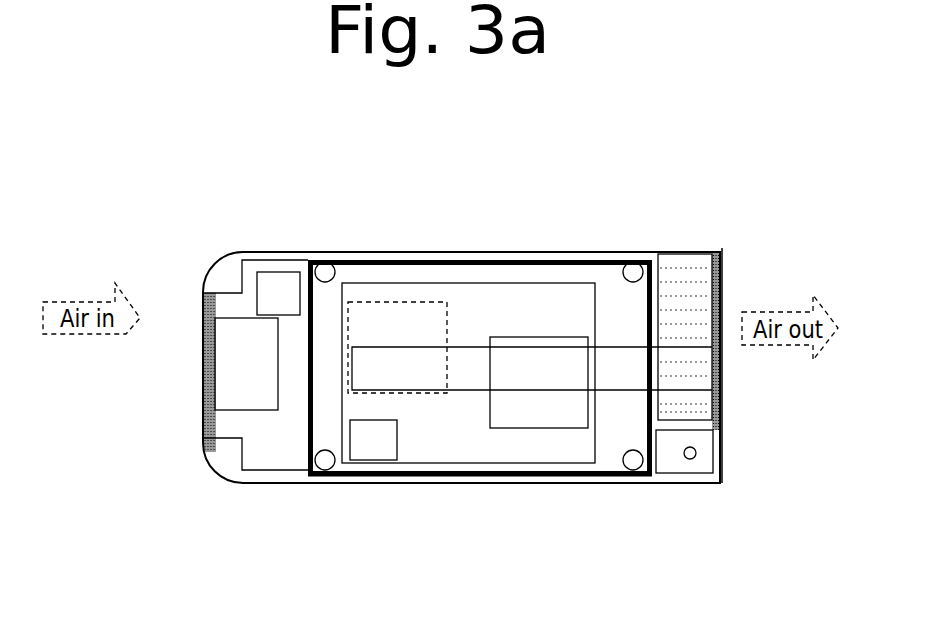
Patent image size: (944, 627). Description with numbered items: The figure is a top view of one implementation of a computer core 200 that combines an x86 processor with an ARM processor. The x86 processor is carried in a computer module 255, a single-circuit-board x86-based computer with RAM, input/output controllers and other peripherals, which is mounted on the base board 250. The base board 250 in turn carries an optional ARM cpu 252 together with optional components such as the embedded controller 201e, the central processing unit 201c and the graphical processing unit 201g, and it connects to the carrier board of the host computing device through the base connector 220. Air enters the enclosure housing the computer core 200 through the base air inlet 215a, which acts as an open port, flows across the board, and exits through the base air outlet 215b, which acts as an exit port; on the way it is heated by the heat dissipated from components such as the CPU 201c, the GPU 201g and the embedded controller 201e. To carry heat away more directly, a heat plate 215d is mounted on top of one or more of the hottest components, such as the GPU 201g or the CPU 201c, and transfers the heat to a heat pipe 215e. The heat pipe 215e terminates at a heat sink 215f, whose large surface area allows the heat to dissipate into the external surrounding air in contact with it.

The computer core 200 is at (487, 252).
The base board 250 is at (270, 258).
The ARM cpu 252 is at (278, 293).
The base connector 220 is at (246, 364).
The computer module (COM) 255 is at (303, 435).
The base air inlet 215a is at (202, 412).
The base air outlet 215b is at (712, 410).
The heat plate 215d is at (410, 463).
The heat pipe 215e is at (480, 390).
The heat sink 215f is at (668, 258).
The central processing unit (CPU) 201c is at (522, 337).
The embedded controller 201e is at (372, 440).
The graphical processing unit (GPU) 201g is at (412, 302).